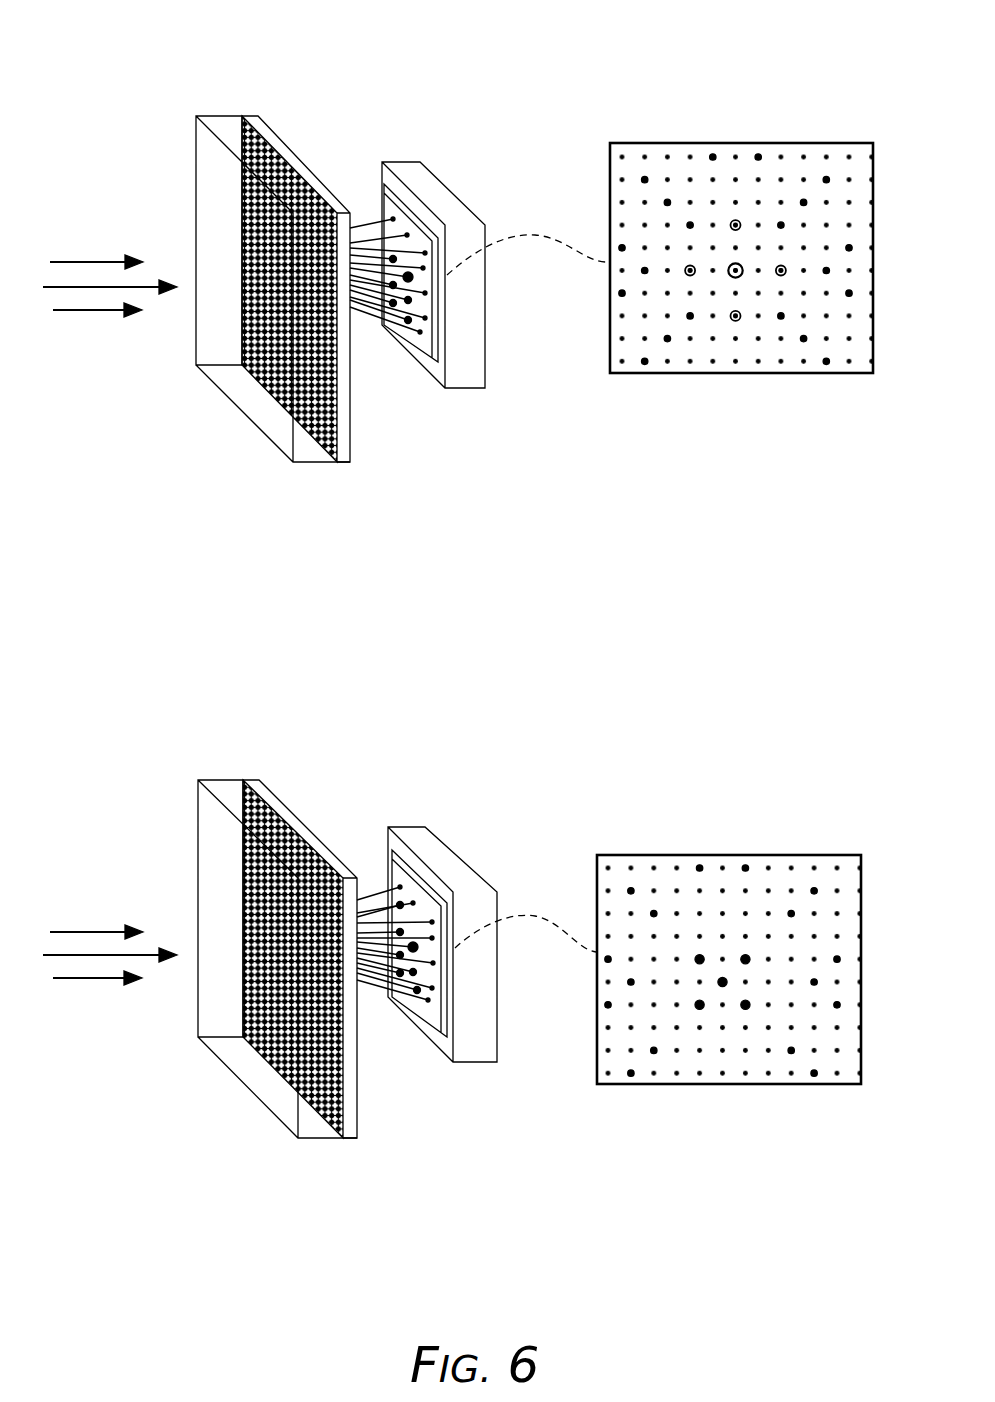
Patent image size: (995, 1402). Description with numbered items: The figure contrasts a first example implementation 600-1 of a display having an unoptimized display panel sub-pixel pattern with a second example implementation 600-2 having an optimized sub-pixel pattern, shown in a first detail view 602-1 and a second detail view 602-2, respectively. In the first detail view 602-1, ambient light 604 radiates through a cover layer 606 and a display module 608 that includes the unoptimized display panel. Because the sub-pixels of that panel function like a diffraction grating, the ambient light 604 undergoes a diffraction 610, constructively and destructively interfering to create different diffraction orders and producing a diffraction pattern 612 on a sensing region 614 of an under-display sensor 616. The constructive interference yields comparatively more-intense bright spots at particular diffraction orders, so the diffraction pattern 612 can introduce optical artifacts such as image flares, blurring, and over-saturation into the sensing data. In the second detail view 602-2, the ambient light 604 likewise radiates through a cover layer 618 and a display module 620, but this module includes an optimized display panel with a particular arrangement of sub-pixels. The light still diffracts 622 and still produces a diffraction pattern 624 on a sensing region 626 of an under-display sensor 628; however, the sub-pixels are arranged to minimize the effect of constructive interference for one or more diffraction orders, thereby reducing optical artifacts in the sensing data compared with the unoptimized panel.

The first example implementation 600-1 is at (450, 498).
The second example implementation 600-2 is at (530, 945).
The first detail view 602-1 is at (450, 530).
The second detail view 602-2 is at (529, 989).
The ambient light 604 is at (102, 248).
The cover layer 606 is at (316, 462).
The display module 608 is at (345, 462).
The diffraction 610 is at (370, 207).
The diffraction pattern 612 is at (422, 338).
The sensing region 614 is at (386, 182).
The under-display sensor 616 is at (412, 162).
The cover layer 618 is at (320, 1138).
The display module 620 is at (350, 1138).
The diffraction 622 is at (375, 878).
The diffraction pattern 624 is at (430, 1005).
The sensing region 626 is at (394, 850).
The under-display sensor 628 is at (423, 827).